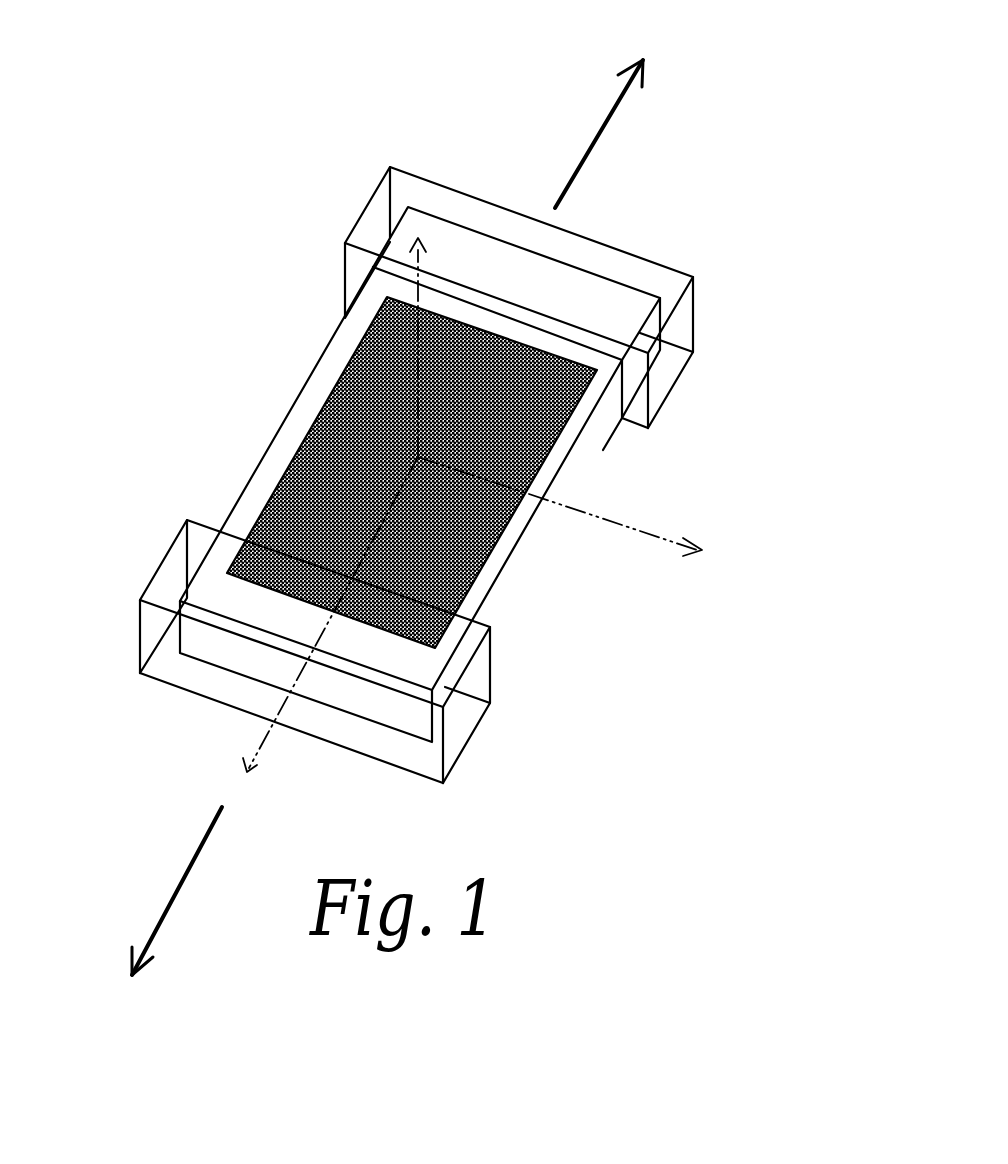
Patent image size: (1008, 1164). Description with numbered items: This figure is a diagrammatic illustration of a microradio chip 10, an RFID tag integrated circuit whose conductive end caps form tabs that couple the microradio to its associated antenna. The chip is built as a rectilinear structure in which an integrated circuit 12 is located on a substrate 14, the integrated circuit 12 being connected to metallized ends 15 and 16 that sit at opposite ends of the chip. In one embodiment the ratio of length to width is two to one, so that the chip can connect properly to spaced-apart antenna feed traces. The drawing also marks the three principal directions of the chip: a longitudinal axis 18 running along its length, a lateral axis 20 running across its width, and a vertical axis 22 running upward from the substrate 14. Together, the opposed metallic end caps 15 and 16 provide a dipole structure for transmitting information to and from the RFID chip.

The microradio chip 10 is at (443, 514).
The integrated circuit 12 is at (330, 437).
The substrate 14 is at (398, 474).
The metallized end 15 is at (177, 668).
The metallized end 16 is at (658, 273).
The longitudinal axis 18 is at (252, 748).
The lateral axis 20 is at (640, 530).
The vertical axis 22 is at (415, 257).